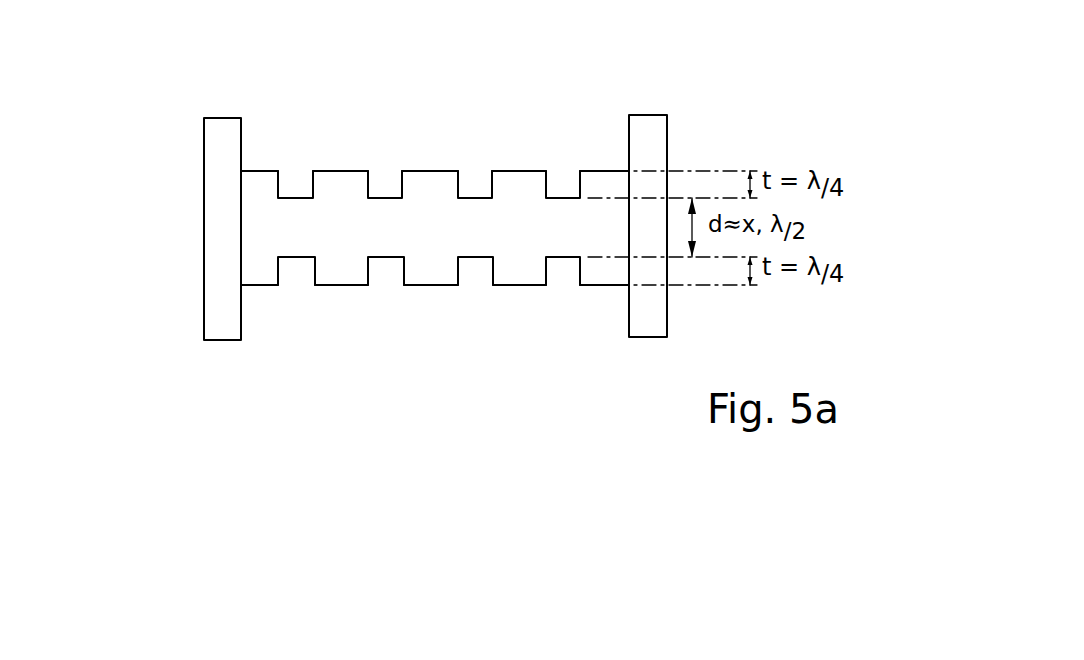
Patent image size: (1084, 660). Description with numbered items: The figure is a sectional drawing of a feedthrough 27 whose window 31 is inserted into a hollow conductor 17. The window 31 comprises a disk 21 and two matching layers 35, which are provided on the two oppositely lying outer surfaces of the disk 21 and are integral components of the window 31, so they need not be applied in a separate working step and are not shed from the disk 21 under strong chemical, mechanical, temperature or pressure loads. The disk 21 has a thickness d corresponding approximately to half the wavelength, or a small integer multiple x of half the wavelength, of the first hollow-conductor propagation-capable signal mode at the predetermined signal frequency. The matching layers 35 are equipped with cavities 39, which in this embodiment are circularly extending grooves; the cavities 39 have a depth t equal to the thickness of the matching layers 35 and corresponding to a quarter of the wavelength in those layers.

The hollow conductor 17 is at (218, 209).
The disk 21 is at (435, 243).
The feedthrough 27 is at (146, 110).
The window 31 is at (326, 123).
The matching layer 35 is at (524, 178).
The cavity 39 is at (290, 181).